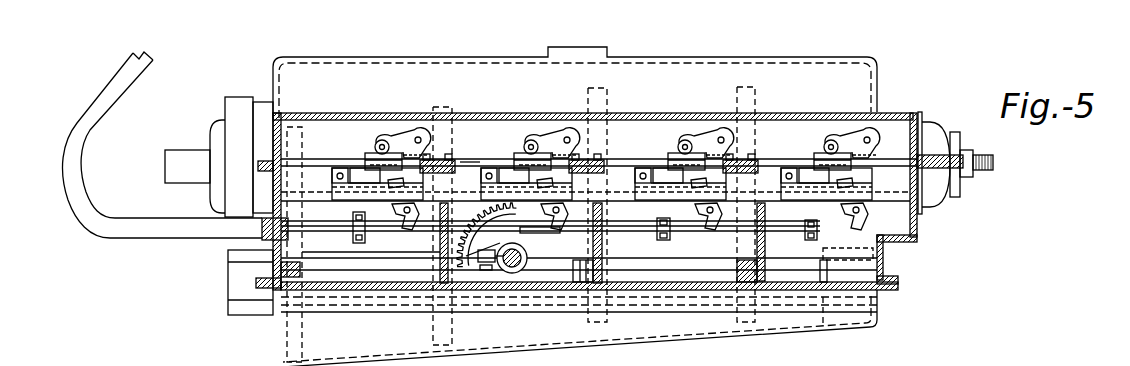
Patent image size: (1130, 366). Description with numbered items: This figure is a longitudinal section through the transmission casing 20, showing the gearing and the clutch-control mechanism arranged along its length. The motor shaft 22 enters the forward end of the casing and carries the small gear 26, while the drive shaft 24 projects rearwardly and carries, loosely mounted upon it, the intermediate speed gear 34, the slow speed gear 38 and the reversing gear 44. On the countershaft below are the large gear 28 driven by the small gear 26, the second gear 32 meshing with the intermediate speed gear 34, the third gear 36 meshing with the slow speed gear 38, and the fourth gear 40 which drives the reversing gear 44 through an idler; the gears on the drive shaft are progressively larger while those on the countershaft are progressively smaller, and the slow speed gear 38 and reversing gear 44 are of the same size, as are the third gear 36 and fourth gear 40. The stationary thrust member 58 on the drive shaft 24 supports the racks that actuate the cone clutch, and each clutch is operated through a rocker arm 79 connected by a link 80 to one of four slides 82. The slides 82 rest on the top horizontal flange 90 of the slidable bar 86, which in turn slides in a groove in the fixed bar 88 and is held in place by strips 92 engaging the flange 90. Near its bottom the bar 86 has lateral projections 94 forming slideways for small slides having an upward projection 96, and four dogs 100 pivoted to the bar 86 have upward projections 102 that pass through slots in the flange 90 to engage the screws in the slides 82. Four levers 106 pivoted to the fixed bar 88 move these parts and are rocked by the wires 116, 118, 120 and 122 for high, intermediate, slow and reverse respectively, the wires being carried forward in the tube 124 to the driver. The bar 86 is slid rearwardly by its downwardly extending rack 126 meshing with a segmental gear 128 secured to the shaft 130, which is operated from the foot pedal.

The transmission casing 20 is at (863, 110).
The motor shaft 22 is at (186, 162).
The drive shaft 24 is at (993, 163).
The small gear 26 is at (299, 151).
The large gear 28 is at (276, 297).
The second gear 32 is at (436, 271).
The intermediate speed gear 34 is at (455, 107).
The third gear 36 is at (590, 290).
The slow speed gear 38 is at (606, 102).
The fourth gear 40 is at (735, 274).
The reversing gear 44 is at (755, 107).
The thrust member 58 is at (580, 328).
The rocker arm 79 is at (418, 130).
The link 80 is at (392, 136).
The slide 82 is at (368, 152).
The slidable bar 86 is at (866, 168).
The fixed bar 88 is at (322, 253).
The top horizontal flange 90 is at (473, 157).
The strips 92 is at (445, 156).
The lateral projections 94 is at (331, 191).
The upward projection 96 is at (403, 182).
The dogs 100 is at (356, 169).
The upward projections 102 is at (506, 172).
The levers 106 is at (404, 231).
The wire 116 is at (366, 238).
The wire 118 is at (538, 234).
The wire 120 is at (664, 214).
The wire 122 is at (885, 243).
The tube 124 is at (173, 218).
The rack 126 is at (480, 222).
The segmental gear 128 is at (479, 262).
The shaft 130 is at (512, 274).